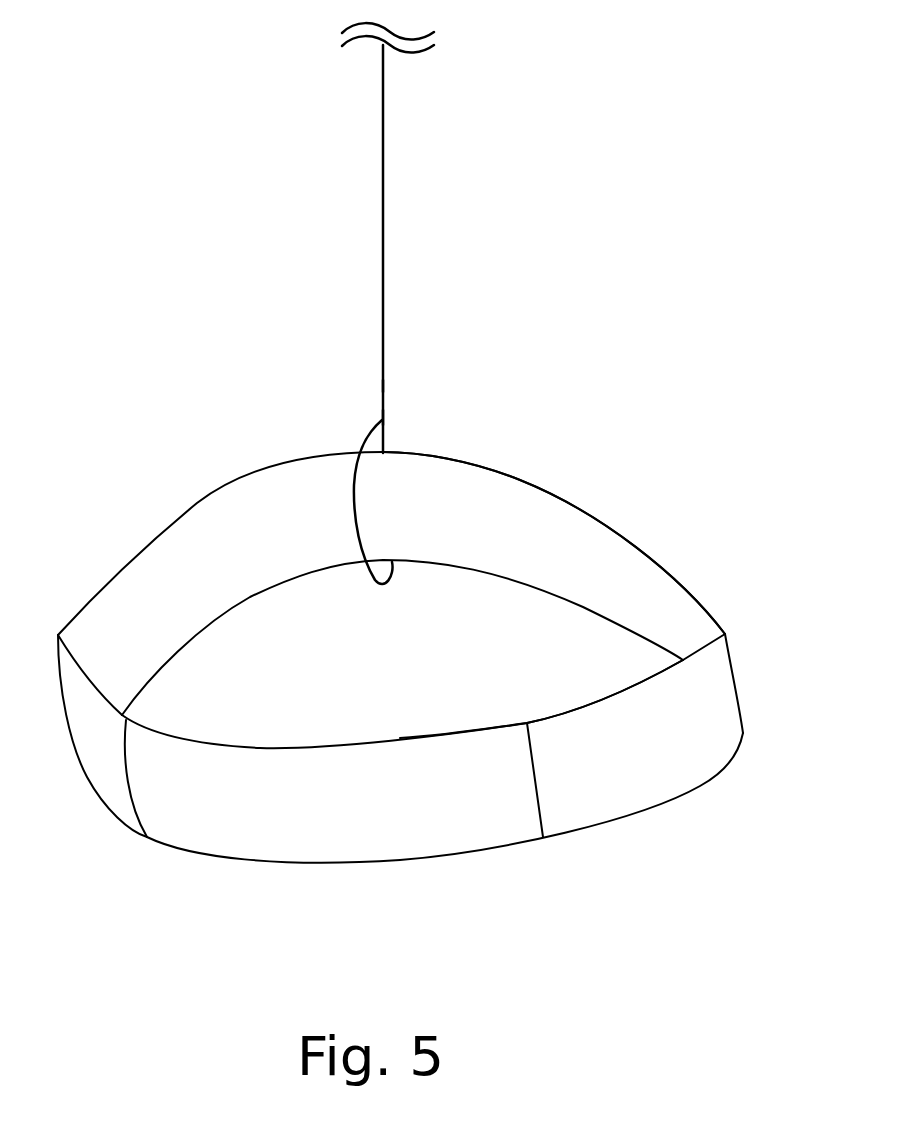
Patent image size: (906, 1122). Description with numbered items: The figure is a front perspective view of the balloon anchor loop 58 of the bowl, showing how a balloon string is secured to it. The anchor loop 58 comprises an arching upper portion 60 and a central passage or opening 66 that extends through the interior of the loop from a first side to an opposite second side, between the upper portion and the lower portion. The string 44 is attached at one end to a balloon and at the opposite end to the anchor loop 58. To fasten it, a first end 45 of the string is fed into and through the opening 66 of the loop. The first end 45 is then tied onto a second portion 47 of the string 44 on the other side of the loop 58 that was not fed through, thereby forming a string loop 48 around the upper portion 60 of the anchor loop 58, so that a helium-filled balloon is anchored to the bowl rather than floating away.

The string 44 is at (383, 195).
The first end 45 is at (382, 420).
The second portion 47 is at (385, 385).
The string loop 48 is at (355, 495).
The anchor loop 58 is at (500, 468).
The upper portion 60 is at (557, 530).
The central passage or opening 66 is at (506, 648).